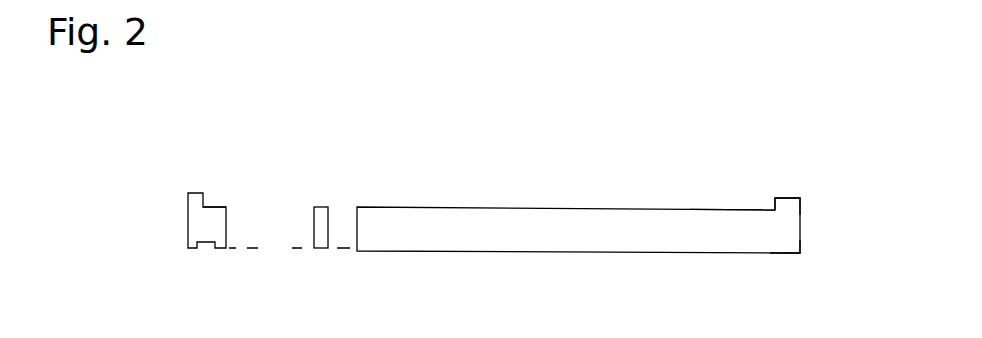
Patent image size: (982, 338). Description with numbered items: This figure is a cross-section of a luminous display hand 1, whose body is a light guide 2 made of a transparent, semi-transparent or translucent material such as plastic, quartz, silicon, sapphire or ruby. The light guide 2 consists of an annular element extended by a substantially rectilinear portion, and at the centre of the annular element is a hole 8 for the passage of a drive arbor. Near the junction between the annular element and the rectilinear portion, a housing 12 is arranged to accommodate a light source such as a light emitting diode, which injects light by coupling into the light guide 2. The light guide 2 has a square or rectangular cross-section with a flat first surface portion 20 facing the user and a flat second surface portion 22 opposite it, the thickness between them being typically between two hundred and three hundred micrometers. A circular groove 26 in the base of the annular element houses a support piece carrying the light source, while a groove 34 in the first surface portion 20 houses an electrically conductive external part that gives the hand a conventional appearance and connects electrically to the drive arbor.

The luminous display hand 1 is at (635, 171).
The light guide 2 is at (573, 250).
The hole 8 is at (270, 248).
The housing 12 is at (342, 251).
The first surface portion 20 is at (779, 179).
The second surface portion 22 is at (790, 270).
The circular groove 26 is at (212, 264).
The groove 34 is at (211, 190).